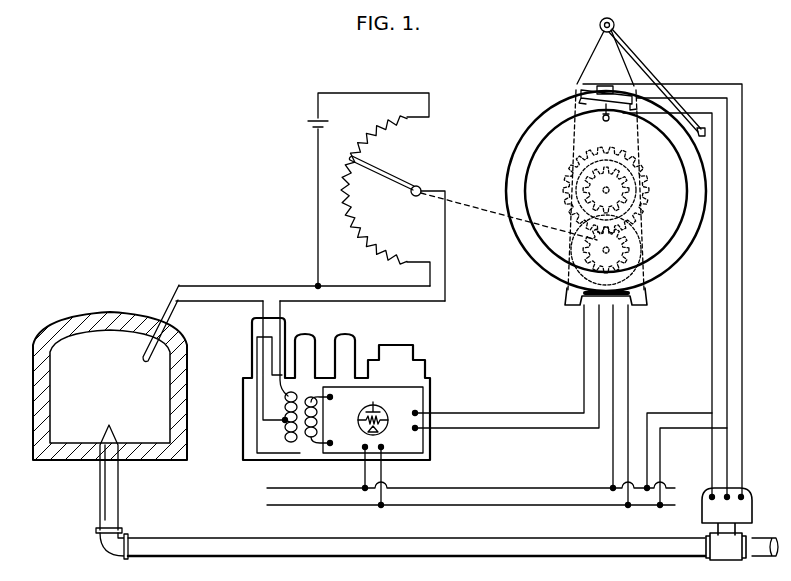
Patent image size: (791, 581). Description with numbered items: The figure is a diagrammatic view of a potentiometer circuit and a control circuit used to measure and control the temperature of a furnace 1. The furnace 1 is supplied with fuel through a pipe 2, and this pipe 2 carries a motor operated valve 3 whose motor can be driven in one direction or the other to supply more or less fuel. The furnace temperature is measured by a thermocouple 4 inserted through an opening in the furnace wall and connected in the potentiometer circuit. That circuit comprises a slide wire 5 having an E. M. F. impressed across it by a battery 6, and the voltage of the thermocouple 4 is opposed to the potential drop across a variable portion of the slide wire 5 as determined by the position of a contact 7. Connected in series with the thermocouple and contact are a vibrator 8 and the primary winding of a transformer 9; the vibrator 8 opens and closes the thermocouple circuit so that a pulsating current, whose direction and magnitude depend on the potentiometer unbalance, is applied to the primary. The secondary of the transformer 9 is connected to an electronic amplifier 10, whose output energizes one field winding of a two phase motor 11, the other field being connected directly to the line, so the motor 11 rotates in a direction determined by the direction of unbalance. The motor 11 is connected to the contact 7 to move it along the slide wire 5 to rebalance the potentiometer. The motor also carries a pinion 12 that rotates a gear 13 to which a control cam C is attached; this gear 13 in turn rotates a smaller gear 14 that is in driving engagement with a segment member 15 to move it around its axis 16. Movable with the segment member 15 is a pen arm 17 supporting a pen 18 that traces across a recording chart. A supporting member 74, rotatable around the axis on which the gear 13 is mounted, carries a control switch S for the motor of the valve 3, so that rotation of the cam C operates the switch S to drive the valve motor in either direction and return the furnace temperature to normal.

The furnace 1 is at (103, 312).
The pipe 2 is at (220, 538).
The motor operated valve 3 is at (728, 560).
The thermocouple 4 is at (143, 355).
The slide wire 5 is at (361, 230).
The battery 6 is at (308, 120).
The contact 7 is at (386, 173).
The vibrator 8 is at (250, 336).
The transformer 9 is at (305, 448).
The electronic amplifier 10 is at (418, 402).
The two phase motor 11 is at (565, 297).
The pinion 12 is at (640, 232).
The gear 13 is at (566, 189).
The smaller gear 14 is at (637, 186).
The segment member 15 is at (592, 66).
The axis 16 is at (614, 22).
The pen arm 17 is at (656, 70).
The pen 18 is at (697, 130).
The supporting member 74 is at (548, 116).
The control cam C is at (542, 157).
The control switch S is at (614, 86).